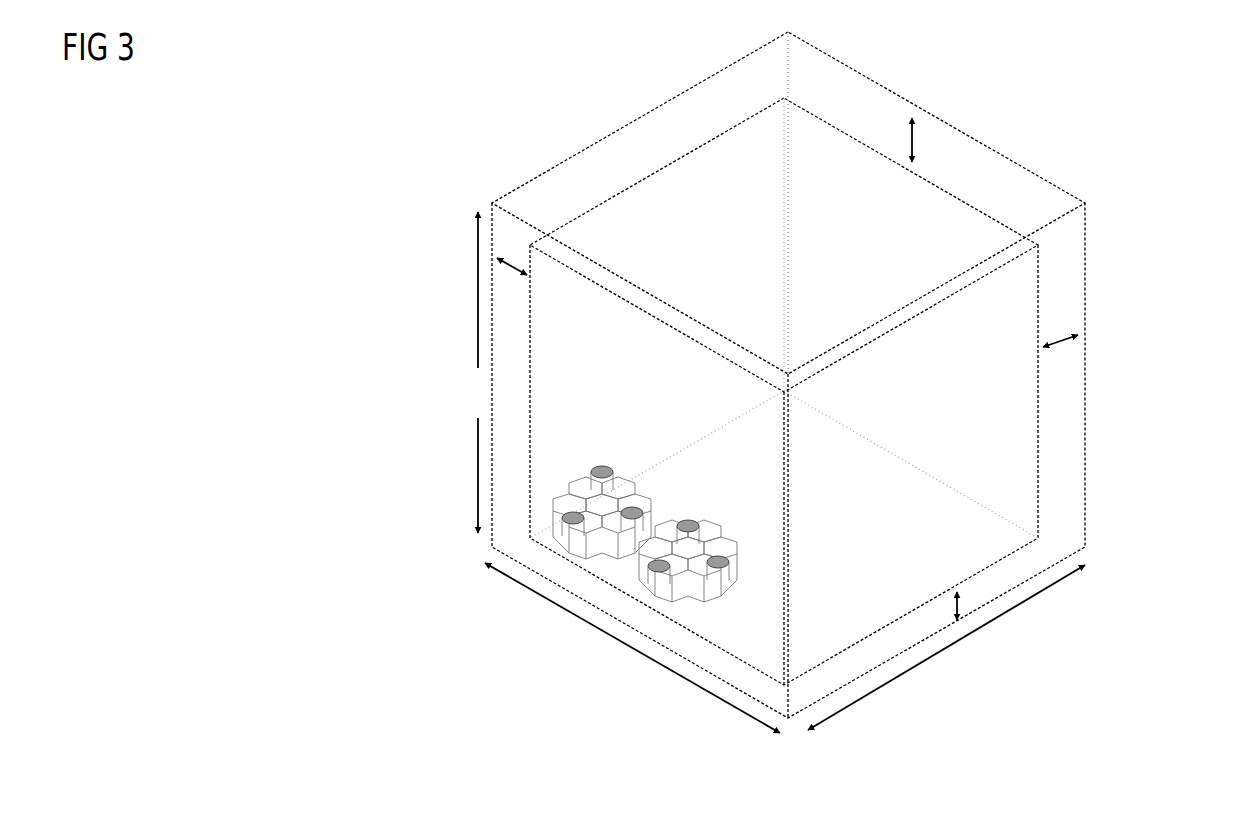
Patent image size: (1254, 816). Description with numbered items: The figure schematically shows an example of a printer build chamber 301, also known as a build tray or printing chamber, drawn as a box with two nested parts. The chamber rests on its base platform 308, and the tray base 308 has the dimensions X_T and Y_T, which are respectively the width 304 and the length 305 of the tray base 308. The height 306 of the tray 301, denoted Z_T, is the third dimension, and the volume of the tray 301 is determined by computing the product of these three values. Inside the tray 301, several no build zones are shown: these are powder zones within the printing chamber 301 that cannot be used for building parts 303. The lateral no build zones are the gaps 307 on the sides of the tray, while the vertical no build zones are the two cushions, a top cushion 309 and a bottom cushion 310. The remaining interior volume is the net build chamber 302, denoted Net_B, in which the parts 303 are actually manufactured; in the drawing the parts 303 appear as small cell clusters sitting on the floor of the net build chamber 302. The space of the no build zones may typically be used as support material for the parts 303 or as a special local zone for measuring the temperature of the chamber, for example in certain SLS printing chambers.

The printer build chamber 301 is at (493, 313).
The net build chamber 302 is at (530, 440).
The parts 303 is at (648, 563).
The width 304 is at (552, 640).
The length 305 is at (1012, 648).
The height 306 is at (455, 398).
The gaps 307 is at (512, 250).
The base platform 308 is at (1060, 538).
The top cushion 309 is at (918, 147).
The bottom cushion 310 is at (944, 613).